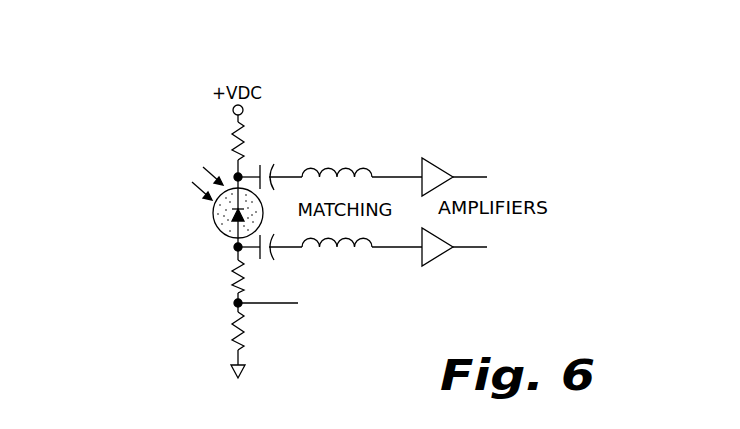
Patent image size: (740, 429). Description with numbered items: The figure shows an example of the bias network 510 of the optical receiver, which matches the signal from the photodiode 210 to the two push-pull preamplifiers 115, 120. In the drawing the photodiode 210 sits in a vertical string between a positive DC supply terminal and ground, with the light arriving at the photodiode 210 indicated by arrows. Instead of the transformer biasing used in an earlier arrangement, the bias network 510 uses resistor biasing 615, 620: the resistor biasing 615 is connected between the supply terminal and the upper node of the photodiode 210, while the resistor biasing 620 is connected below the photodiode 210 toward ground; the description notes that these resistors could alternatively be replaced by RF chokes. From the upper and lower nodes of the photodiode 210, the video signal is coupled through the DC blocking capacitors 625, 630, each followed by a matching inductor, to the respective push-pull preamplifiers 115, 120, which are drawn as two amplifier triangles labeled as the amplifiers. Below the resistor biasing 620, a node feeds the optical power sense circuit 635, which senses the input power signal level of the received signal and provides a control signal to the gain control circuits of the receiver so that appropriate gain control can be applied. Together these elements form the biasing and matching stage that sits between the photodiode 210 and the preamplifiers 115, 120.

The bias network 510 is at (471, 67).
The resistor biasing 615 is at (228, 137).
The DC blocking capacitor 625 is at (288, 162).
The push-pull preamplifier 115 is at (437, 167).
The push-pull preamplifier 120 is at (432, 250).
The photodiode 210 is at (216, 232).
The resistor biasing 620 is at (228, 277).
The optical power sense circuit 635 is at (228, 345).
The DC blocking capacitor 630 is at (268, 263).